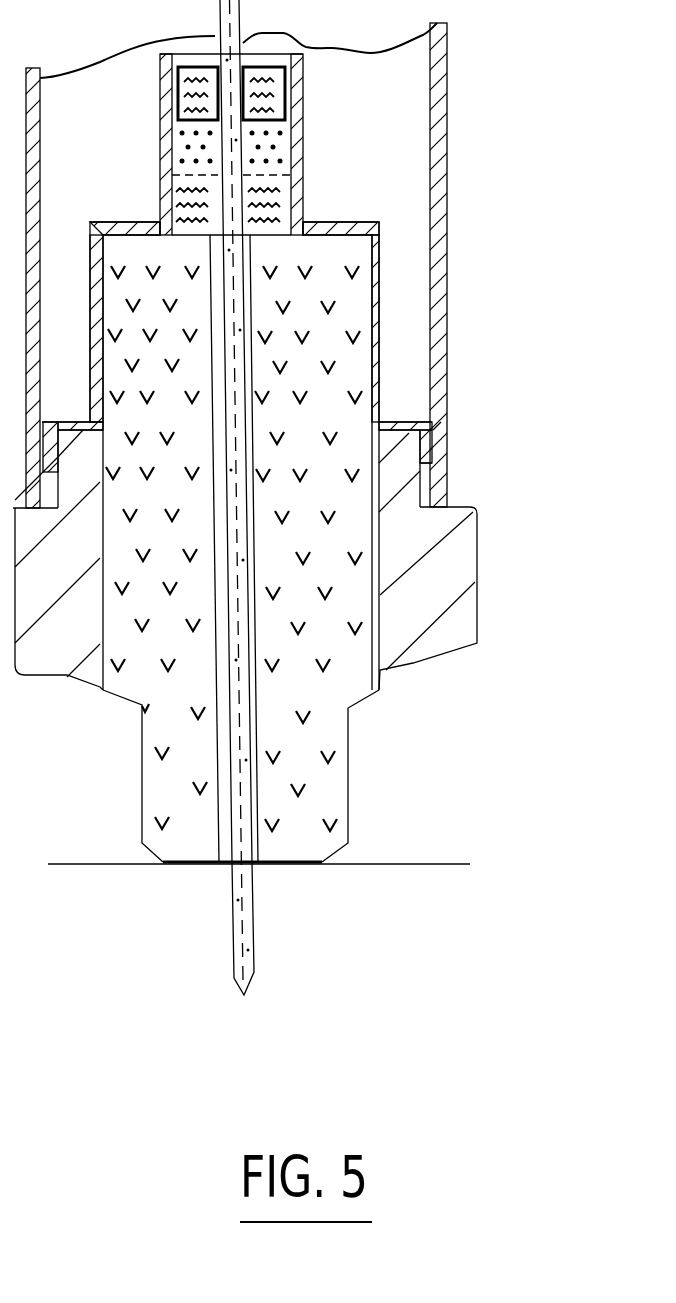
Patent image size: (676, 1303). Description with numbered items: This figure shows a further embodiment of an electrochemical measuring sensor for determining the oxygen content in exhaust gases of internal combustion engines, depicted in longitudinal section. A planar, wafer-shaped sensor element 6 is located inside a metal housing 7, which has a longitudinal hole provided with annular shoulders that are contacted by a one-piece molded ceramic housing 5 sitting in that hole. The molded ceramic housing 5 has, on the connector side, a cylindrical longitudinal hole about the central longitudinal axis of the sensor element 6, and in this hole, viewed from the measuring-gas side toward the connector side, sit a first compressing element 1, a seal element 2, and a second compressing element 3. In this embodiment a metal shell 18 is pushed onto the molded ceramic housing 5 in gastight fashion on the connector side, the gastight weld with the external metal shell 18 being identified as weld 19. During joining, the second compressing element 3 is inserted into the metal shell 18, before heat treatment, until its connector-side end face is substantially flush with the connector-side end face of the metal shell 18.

The first compressing element 1 is at (272, 205).
The seal element 2 is at (283, 147).
The second compressing element 3 is at (274, 83).
The molded ceramic housing 5 is at (348, 731).
The sensor element 6 is at (240, 831).
The metal housing 7 is at (474, 643).
The metal shell 18 is at (381, 305).
The gastight weld 19 is at (428, 448).